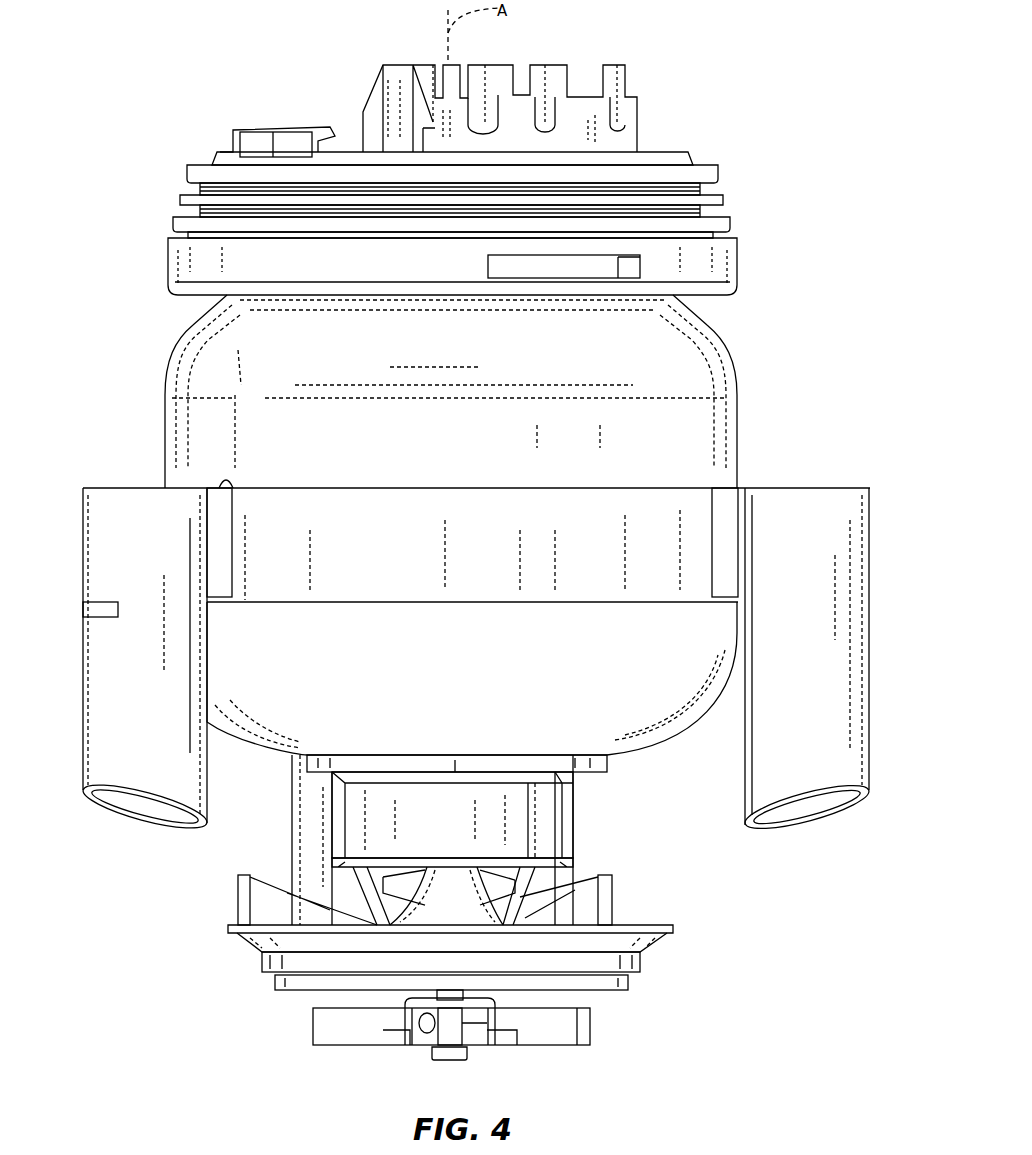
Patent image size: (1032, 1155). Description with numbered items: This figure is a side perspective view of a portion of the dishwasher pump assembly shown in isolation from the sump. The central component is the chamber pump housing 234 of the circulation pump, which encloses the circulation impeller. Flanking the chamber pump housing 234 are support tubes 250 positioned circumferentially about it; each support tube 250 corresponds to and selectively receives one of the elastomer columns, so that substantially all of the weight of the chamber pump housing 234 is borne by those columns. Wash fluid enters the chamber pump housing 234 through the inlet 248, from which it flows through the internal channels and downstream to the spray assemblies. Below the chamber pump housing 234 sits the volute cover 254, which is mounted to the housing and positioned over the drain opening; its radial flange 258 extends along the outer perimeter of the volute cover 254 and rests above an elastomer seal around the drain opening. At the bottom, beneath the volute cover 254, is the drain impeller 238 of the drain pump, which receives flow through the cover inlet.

The chamber pump housing 234 is at (726, 428).
The support tubes 250 is at (112, 678).
The inlet 248 is at (523, 867).
The radial flange 258 is at (660, 935).
The volute cover 254 is at (632, 978).
The drain impeller 238 is at (333, 1035).